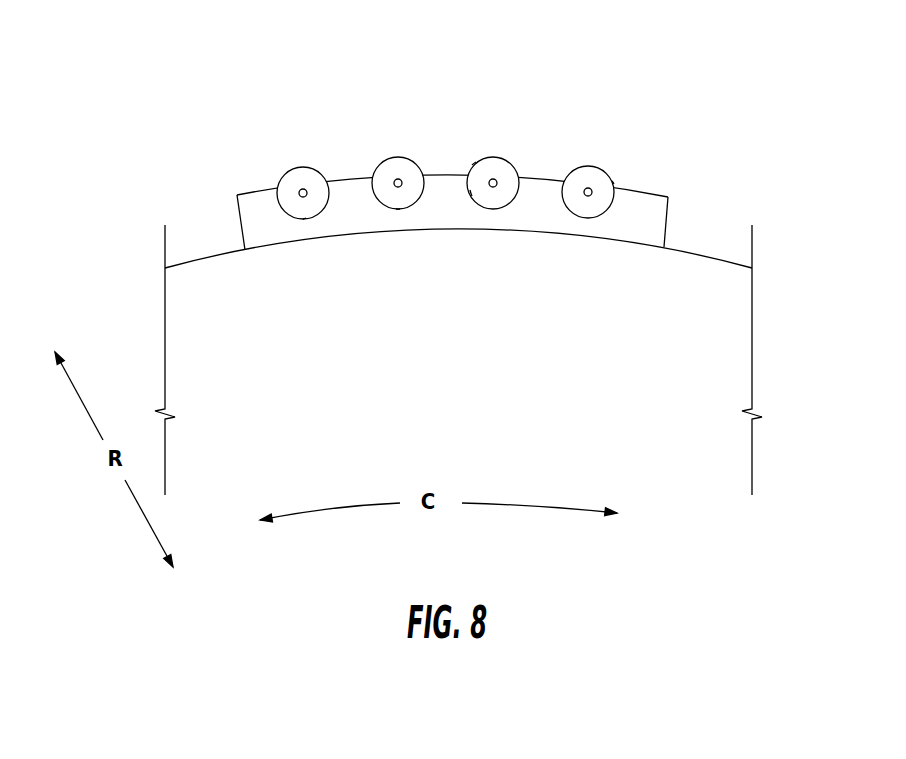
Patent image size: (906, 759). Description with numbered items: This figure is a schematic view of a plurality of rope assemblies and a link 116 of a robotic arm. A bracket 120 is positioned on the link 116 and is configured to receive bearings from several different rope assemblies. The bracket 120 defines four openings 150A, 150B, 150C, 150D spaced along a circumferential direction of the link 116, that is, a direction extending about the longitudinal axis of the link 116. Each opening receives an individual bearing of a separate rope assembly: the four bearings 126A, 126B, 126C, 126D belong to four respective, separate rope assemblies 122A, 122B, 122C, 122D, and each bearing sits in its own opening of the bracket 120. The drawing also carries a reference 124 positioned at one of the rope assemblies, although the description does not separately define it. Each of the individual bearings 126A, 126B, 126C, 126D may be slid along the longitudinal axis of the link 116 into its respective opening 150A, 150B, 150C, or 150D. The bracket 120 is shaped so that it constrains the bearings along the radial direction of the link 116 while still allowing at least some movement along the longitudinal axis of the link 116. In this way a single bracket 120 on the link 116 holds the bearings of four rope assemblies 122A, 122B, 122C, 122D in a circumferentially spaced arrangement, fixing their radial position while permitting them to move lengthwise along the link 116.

The link 116 is at (682, 277).
The bracket 120 is at (653, 208).
The rope assembly 122A is at (591, 145).
The rope assembly 122B is at (510, 143).
The rope assembly 122C is at (373, 152).
The rope assembly 122D is at (302, 160).
The roller axis 124 is at (497, 178).
The bearing 126A is at (615, 182).
The bearing 126B is at (484, 167).
The bearing 126C is at (380, 205).
The bearing 126D is at (308, 210).
The opening 150A is at (587, 188).
The opening 150B is at (484, 196).
The opening 150C is at (406, 186).
The opening 150D is at (289, 203).